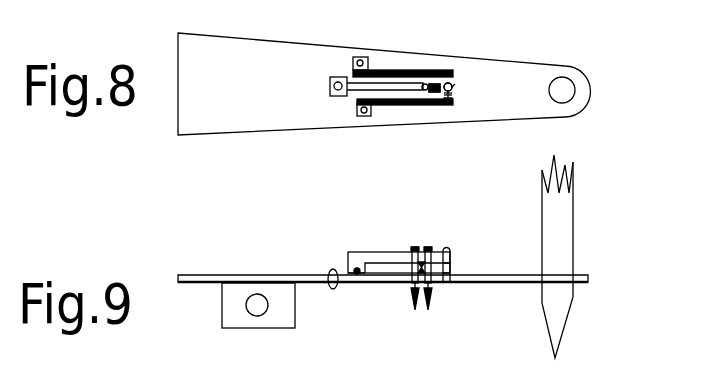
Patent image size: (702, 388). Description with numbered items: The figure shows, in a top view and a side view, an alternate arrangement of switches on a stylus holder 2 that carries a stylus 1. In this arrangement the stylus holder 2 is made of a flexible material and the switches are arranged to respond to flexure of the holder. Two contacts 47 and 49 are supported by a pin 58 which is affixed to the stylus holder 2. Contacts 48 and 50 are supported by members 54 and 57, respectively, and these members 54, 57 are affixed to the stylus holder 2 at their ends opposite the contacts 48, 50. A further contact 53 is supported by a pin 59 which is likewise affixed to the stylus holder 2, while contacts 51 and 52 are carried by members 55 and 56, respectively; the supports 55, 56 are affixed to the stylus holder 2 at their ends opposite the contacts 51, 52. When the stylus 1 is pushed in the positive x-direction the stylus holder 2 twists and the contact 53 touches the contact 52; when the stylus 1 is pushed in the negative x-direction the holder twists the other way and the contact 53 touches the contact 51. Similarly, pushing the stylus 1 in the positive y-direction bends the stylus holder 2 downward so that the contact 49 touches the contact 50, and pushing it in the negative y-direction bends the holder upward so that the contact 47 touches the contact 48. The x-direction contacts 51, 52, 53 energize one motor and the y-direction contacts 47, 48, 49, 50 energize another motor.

In FIG. 8, the stylus 1 is at (565, 88).
In FIG. 9, the stylus 1 is at (573, 203).
In FIG. 8, the stylus holder 2 is at (588, 98).
In FIG. 9, the stylus holder 2 is at (590, 276).
In FIG. 8, the contact 47 is at (446, 95).
In FIG. 9, the contact 47 is at (427, 250).
In FIG. 8, the contact 48 is at (434, 84).
In FIG. 9, the contact 48 is at (414, 250).
In FIG. 8, the contact 49 is at (455, 130).
In FIG. 9, the contact 49 is at (430, 300).
In FIG. 8, the contact 50 is at (444, 48).
In FIG. 9, the contact 50 is at (416, 298).
In FIG. 8, the contact 51 is at (452, 83).
In FIG. 8, the contact 52 is at (454, 98).
In FIG. 8, the contact 53 is at (452, 88).
In FIG. 9, the contact 53 is at (448, 250).
In FIG. 8, the member 54 is at (358, 92).
In FIG. 9, the member 54 is at (378, 265).
In FIG. 8, the member 55 is at (390, 71).
In FIG. 9, the member 55 is at (358, 252).
In FIG. 8, the member 56 is at (392, 106).
In FIG. 9, the member 56 is at (389, 240).
In FIG. 8, the member 57 is at (376, 126).
In FIG. 9, the member 57 is at (360, 283).
In FIG. 9, the pin 58 is at (432, 294).
In FIG. 8, the pin 59 is at (512, 58).
In FIG. 9, the pin 59 is at (452, 268).